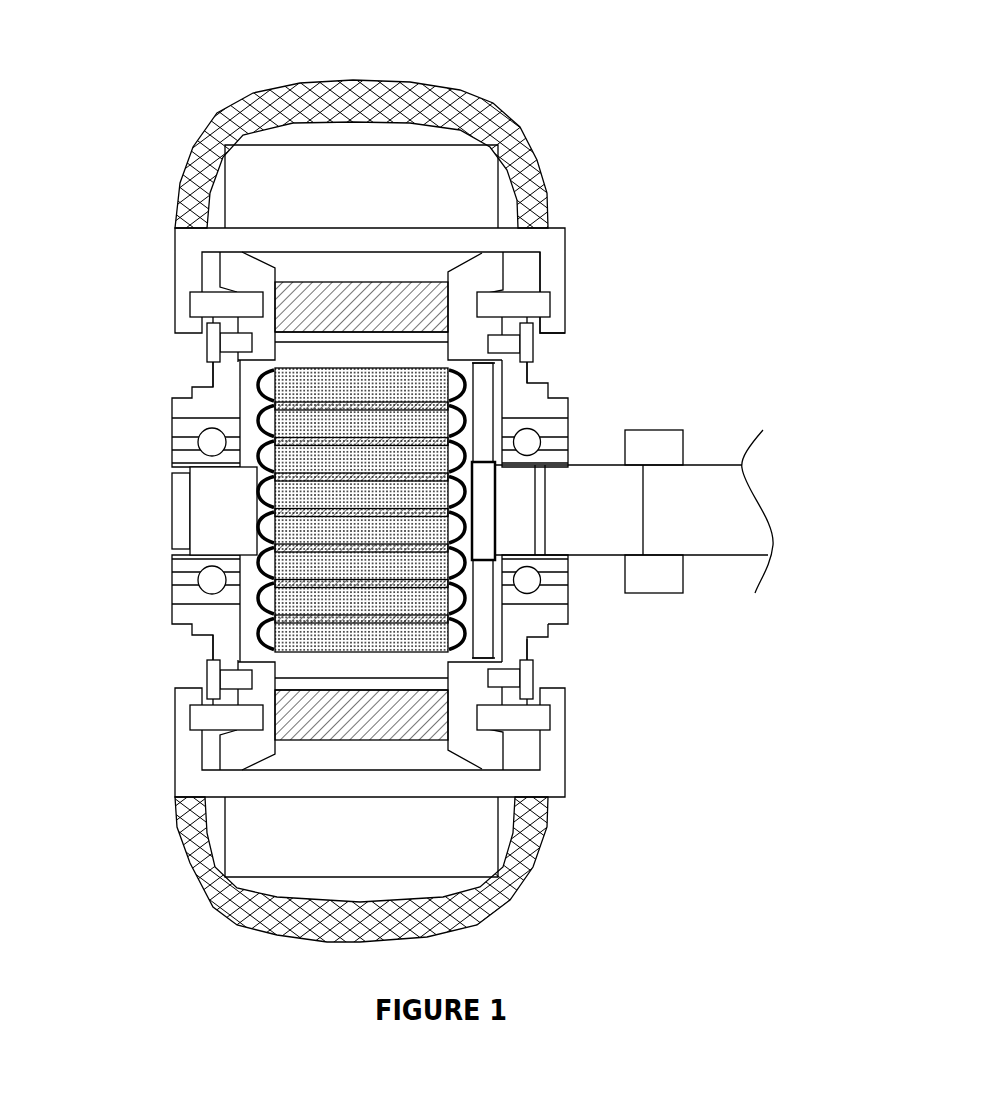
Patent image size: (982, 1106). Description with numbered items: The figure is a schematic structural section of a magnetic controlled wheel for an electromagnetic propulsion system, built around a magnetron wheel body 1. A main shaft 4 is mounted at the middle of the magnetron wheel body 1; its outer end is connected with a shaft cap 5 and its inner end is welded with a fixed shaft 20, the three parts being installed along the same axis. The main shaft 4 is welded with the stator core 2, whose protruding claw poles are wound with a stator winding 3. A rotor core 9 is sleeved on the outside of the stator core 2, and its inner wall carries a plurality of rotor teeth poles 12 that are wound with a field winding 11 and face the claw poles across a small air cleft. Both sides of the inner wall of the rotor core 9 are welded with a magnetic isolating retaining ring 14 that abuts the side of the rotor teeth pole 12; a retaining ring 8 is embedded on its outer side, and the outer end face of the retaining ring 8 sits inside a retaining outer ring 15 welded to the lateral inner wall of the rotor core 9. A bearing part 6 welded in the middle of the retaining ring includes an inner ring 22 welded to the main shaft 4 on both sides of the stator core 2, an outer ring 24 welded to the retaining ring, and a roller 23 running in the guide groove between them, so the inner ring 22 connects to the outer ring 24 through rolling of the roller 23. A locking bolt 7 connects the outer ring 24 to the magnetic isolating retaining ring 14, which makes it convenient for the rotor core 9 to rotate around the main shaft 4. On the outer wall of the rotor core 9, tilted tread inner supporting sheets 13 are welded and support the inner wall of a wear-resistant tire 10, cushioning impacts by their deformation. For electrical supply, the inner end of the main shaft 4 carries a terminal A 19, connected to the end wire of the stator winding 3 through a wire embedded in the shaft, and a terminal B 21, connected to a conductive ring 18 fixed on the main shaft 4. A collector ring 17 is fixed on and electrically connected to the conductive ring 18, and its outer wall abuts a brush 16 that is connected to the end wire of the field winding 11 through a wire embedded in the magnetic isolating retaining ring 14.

The magnetron wheel body 1 is at (182, 827).
The stator core 2 is at (293, 639).
The stator winding 3 is at (257, 598).
The main shaft 4 is at (215, 535).
The shaft cap 5 is at (172, 512).
The bearing part 6 is at (173, 442).
The locking bolt 7 is at (210, 345).
The retaining ring 8 is at (200, 308).
The rotor core 9 is at (175, 253).
The wear-resistant tire 10 is at (192, 163).
The field winding 11 is at (315, 295).
The rotor teeth pole 12 is at (358, 338).
The tread inner supporting sheet 13 is at (450, 182).
The magnetic isolating retaining ring 14 is at (490, 277).
The retaining outer ring 15 is at (550, 325).
The brush 16 is at (493, 363).
The collector ring 17 is at (485, 413).
The conductive ring 18 is at (480, 497).
The terminal A 19 is at (658, 450).
The fixed shaft 20 is at (657, 513).
The terminal B 21 is at (655, 568).
The inner ring 22 is at (552, 565).
The roller 23 is at (538, 590).
The outer ring 24 is at (552, 637).